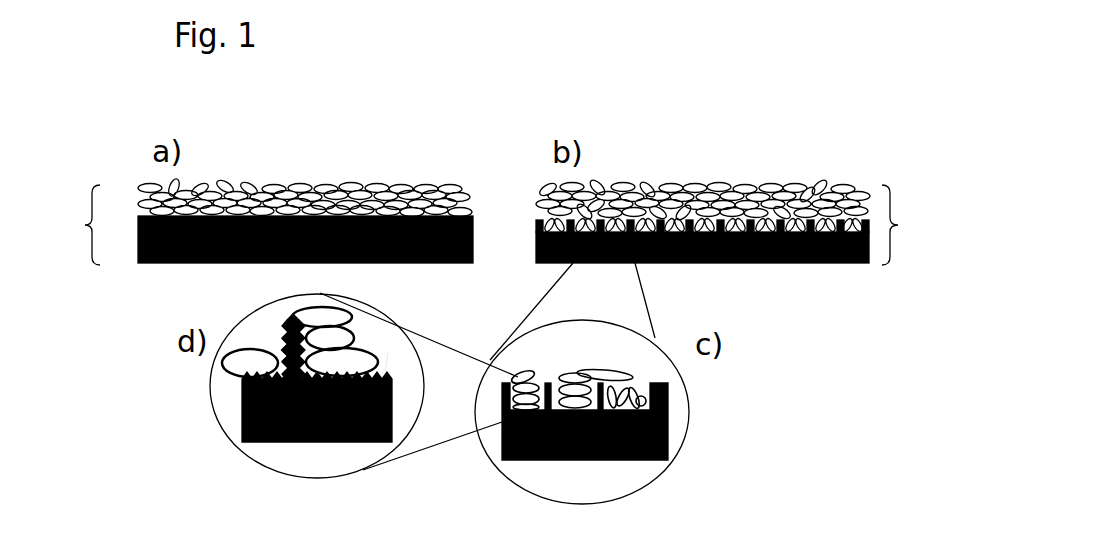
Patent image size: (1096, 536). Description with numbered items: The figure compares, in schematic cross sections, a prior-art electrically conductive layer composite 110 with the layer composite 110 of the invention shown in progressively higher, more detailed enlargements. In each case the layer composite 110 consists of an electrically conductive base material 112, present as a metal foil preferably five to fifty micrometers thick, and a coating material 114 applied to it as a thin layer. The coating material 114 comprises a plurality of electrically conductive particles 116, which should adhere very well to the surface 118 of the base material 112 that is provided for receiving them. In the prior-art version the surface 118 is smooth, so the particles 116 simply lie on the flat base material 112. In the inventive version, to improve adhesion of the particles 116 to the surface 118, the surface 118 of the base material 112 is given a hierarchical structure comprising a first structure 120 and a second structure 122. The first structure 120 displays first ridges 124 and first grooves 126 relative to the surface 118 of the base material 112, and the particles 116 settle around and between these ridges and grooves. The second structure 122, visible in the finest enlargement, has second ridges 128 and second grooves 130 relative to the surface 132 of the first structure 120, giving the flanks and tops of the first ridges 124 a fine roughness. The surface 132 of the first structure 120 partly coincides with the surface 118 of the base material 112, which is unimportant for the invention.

The layer composite 110 is at (489, 225).
The base material 112 is at (378, 500).
The coating material 114 is at (798, 183).
The electrically conductive particles 116 is at (350, 360).
The surface of the base material 118 is at (543, 250).
The first structure 120 is at (492, 320).
The second structure 122 is at (216, 338).
The first ridges 124 is at (668, 403).
The first grooves 126 is at (640, 382).
The second ridges 128 is at (287, 338).
The second grooves 130 is at (277, 345).
The surface of the first structure 132 is at (385, 372).